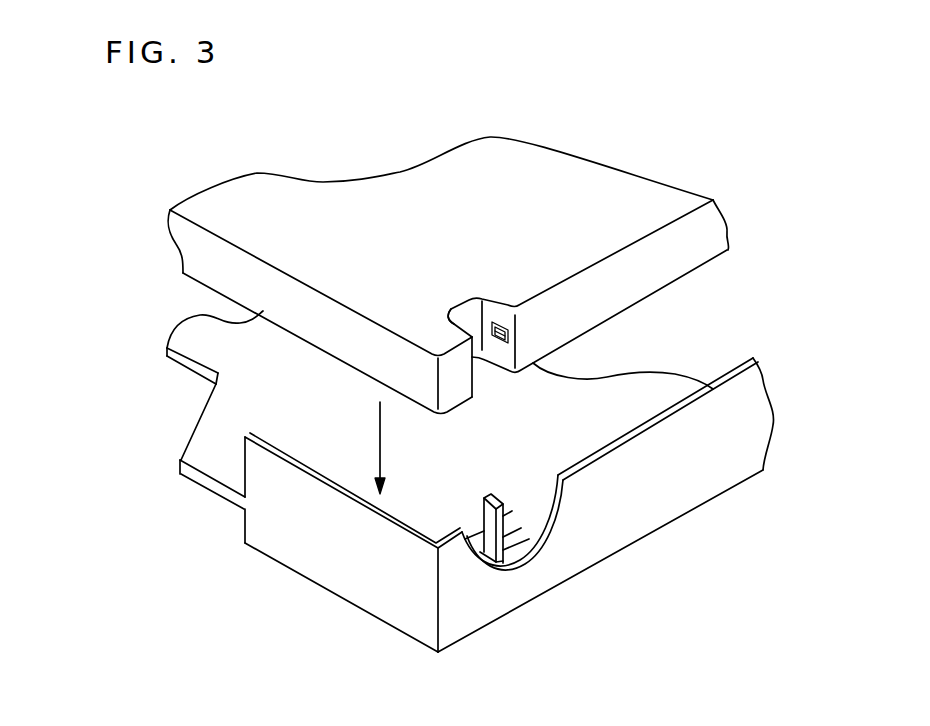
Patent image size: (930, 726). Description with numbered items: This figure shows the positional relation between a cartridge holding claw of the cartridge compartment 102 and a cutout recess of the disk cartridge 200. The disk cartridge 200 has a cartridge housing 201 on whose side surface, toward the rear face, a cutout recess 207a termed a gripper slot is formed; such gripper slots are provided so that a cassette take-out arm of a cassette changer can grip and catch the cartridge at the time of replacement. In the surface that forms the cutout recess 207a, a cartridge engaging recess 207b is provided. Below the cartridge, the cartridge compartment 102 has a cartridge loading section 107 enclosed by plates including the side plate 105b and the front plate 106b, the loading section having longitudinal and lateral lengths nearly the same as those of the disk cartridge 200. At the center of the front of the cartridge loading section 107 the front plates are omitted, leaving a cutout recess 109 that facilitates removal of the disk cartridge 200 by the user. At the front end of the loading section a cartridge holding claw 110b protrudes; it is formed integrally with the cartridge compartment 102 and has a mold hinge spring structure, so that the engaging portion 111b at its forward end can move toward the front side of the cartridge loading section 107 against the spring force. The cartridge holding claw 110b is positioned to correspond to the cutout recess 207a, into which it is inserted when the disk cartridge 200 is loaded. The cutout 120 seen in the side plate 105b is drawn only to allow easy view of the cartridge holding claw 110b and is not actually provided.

The disk cartridge 200 is at (622, 318).
The cartridge housing 201 is at (580, 187).
The cutout recess 207a is at (450, 312).
The cartridge engaging recess 207b is at (491, 320).
The cartridge compartment 102 is at (538, 521).
The side plate 105b is at (686, 477).
The front plate 106b is at (394, 576).
The cartridge loading section 107 is at (264, 402).
The cutout recess 109 is at (191, 443).
The cartridge holding claw 110b is at (505, 568).
The engaging portion 111b is at (517, 521).
The cutout 120 is at (620, 516).